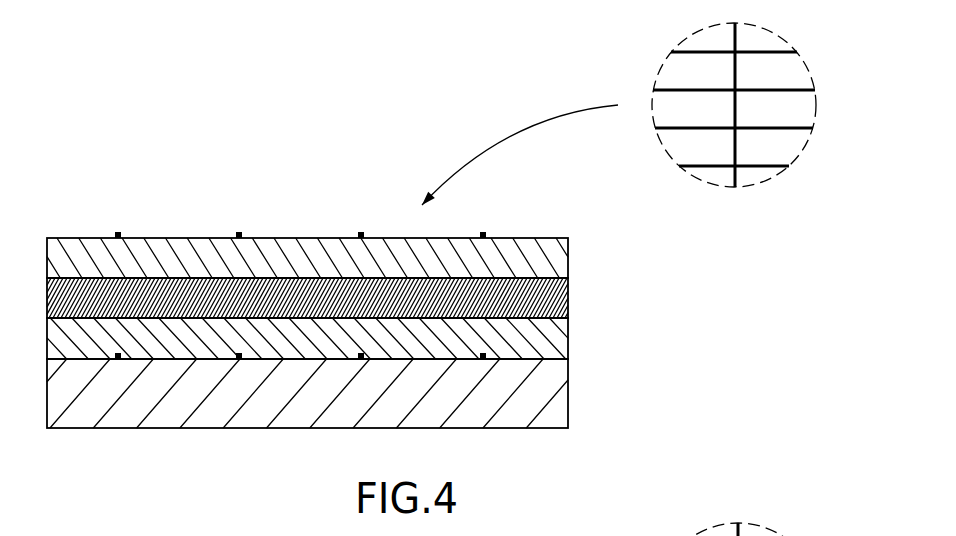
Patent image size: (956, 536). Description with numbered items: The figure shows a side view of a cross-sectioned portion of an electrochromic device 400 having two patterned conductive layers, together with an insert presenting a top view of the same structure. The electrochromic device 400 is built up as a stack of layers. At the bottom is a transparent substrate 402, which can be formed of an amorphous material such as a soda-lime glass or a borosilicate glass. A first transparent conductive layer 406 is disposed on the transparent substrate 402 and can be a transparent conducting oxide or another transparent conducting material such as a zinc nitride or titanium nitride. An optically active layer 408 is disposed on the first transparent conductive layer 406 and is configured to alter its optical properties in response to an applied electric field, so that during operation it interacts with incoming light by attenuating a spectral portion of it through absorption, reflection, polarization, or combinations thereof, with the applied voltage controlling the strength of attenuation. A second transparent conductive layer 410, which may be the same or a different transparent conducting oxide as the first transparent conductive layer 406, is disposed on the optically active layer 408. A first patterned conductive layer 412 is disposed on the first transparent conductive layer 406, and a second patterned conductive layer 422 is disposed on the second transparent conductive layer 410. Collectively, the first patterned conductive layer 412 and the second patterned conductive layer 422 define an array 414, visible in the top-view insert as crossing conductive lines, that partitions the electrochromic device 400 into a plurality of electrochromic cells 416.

The electrochromic device 400 is at (236, 72).
The transparent substrate 402 is at (568, 418).
The first transparent conductive layer 406 is at (568, 347).
The optically active layer 408 is at (568, 305).
The second transparent conductive layer 410 is at (568, 265).
The first patterned conductive layer 412 is at (488, 356).
The array 414 is at (668, 89).
The electrochromic cells 416 is at (677, 145).
The second patterned conductive layer 422 is at (118, 232).